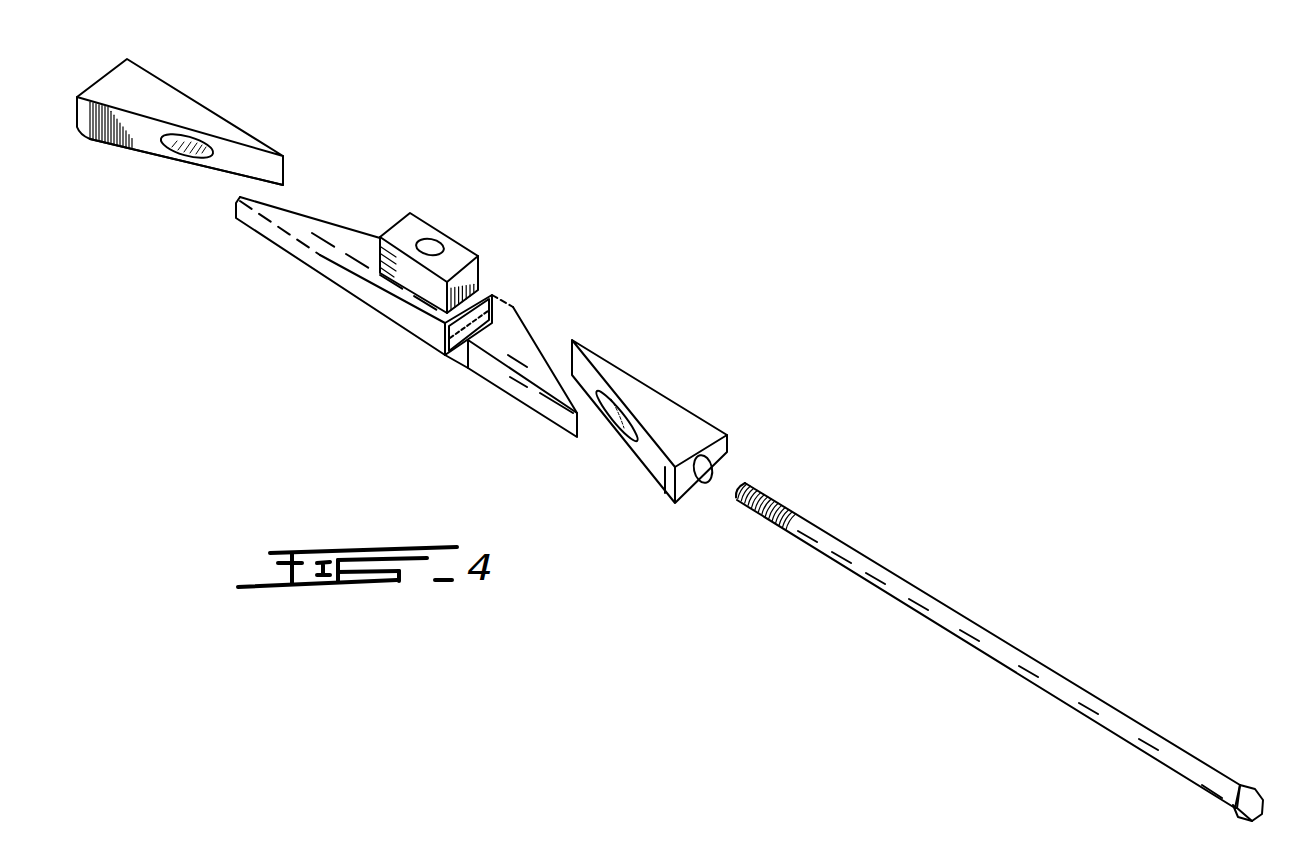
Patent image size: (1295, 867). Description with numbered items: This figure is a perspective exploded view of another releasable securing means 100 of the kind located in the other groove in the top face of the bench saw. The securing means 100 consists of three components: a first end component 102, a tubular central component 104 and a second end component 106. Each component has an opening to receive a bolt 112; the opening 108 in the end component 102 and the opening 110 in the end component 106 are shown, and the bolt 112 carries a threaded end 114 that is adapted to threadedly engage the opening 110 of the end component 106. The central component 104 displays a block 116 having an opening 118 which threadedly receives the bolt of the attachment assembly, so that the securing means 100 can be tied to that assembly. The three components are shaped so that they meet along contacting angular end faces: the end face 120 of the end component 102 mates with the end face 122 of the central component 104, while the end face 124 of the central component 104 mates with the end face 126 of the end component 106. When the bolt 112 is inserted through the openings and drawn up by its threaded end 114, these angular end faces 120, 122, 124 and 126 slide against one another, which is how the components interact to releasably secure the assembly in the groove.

The releasable securing means 100 is at (524, 255).
The end component 102 is at (675, 417).
The central component 104 is at (353, 234).
The end component 106 is at (153, 90).
The opening 108 is at (707, 472).
The opening 110 is at (188, 153).
The bolt 112 is at (968, 622).
The threaded end 114 is at (764, 518).
The block 116 is at (412, 228).
The opening 118 is at (433, 243).
The angular end face 120 is at (647, 457).
The angular end face 122 is at (530, 343).
The angular end face 124 is at (322, 218).
The angular end face 126 is at (238, 163).